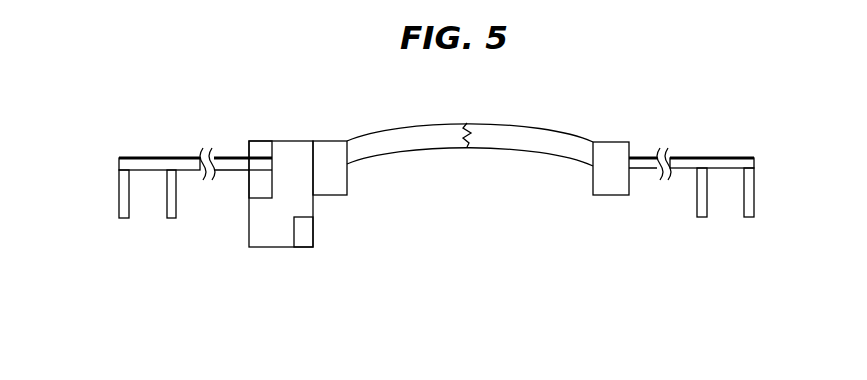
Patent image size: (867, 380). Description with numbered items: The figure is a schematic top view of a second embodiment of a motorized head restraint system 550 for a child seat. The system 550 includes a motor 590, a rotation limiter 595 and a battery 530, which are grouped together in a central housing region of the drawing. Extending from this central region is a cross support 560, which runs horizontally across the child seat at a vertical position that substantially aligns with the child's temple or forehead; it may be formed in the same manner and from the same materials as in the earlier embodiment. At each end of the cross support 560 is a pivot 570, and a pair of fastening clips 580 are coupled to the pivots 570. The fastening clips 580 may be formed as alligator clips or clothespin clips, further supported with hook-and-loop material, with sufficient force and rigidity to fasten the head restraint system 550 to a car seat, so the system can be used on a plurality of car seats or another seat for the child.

The battery 530 is at (308, 233).
The motorized head restraint system 550 is at (407, 168).
The cross support 560 is at (522, 138).
The pivot 570 is at (331, 150).
The fastening clip 580 is at (141, 228).
The motor 590 is at (253, 185).
The rotation limiter 595 is at (258, 140).